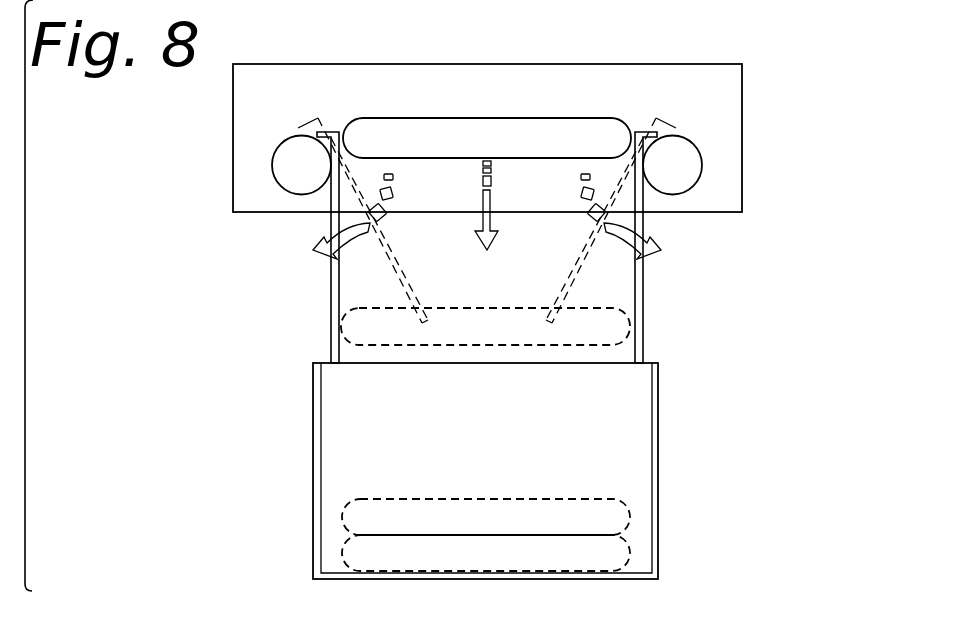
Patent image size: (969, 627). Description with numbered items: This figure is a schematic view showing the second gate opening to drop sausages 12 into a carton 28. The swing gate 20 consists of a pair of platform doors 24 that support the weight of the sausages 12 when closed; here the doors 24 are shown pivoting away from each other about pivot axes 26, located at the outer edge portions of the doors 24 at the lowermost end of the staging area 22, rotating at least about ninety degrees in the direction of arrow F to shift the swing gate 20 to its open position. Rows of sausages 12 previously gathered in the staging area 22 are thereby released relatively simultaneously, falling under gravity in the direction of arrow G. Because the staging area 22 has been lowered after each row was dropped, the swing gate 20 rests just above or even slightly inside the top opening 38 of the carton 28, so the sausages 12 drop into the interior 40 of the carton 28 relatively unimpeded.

The sausages 12 is at (555, 128).
The swing gate 20 is at (682, 207).
The staging area 22 is at (722, 93).
The platform doors 24 is at (331, 297).
The pivot axes 26 is at (298, 165).
The carton 28 is at (660, 458).
The top opening 38 is at (647, 363).
The interior 40 is at (348, 448).